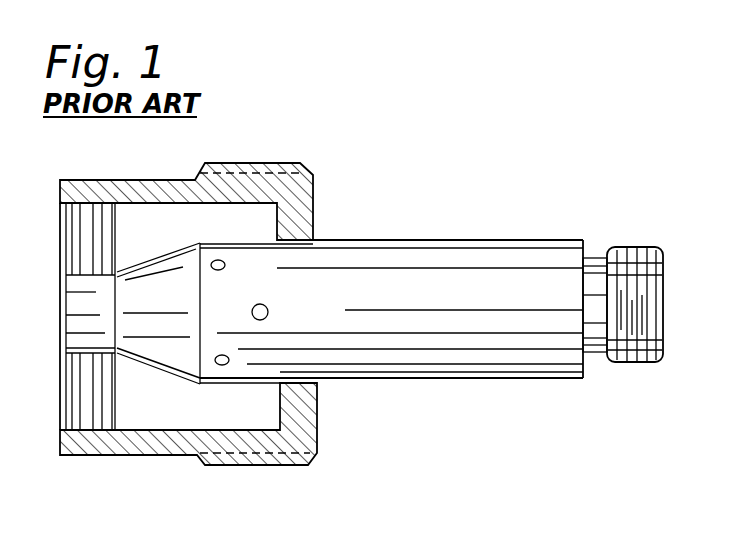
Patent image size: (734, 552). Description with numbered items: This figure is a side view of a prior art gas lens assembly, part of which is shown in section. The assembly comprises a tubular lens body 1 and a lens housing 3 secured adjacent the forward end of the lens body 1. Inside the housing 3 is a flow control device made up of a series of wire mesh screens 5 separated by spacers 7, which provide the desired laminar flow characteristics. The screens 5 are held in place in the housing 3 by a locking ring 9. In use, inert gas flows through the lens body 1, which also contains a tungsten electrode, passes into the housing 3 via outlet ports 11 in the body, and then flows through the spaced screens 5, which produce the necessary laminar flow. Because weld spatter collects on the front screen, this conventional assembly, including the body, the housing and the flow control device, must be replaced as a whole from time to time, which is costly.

The tubular lens body 1 is at (460, 240).
The lens housing 3 is at (317, 418).
The wire mesh screens 5 is at (103, 440).
The spacers 7 is at (123, 450).
The locking ring 9 is at (88, 457).
The outlet ports 11 is at (225, 265).